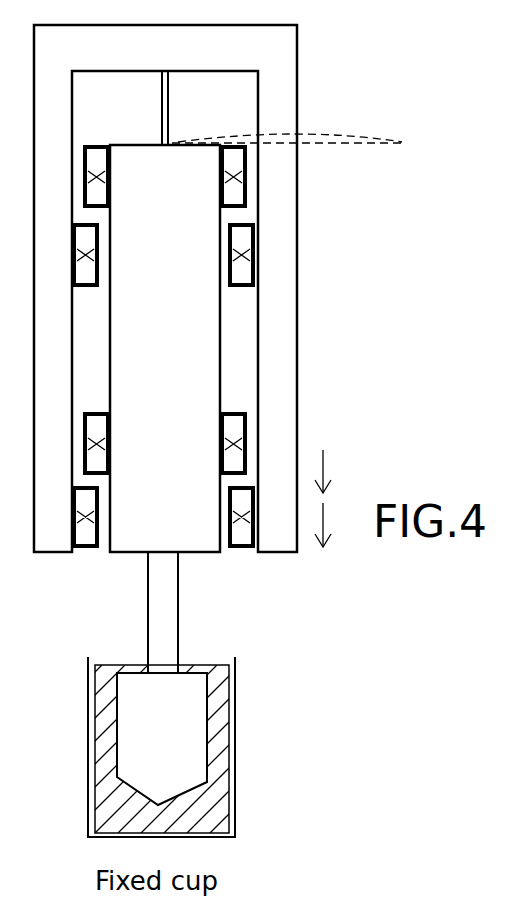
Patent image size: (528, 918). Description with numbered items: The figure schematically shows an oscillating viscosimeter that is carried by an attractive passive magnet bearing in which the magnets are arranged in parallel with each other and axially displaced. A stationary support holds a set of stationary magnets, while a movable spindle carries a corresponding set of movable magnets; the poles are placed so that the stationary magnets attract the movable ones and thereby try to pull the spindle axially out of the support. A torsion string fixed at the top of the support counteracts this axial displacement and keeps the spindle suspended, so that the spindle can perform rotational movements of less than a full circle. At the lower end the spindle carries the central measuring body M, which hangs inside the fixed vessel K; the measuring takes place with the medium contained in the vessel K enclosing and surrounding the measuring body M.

The vessel K is at (236, 773).
The central measuring body M is at (174, 741).